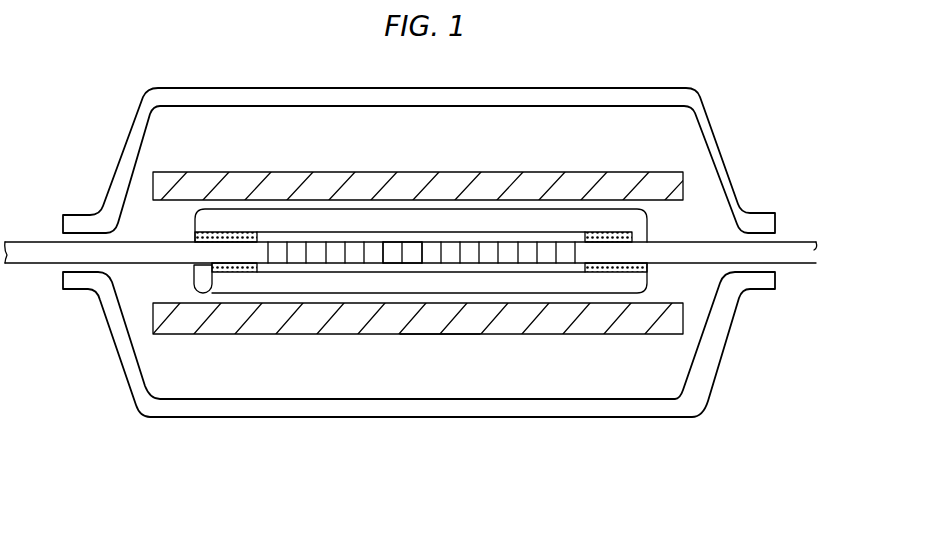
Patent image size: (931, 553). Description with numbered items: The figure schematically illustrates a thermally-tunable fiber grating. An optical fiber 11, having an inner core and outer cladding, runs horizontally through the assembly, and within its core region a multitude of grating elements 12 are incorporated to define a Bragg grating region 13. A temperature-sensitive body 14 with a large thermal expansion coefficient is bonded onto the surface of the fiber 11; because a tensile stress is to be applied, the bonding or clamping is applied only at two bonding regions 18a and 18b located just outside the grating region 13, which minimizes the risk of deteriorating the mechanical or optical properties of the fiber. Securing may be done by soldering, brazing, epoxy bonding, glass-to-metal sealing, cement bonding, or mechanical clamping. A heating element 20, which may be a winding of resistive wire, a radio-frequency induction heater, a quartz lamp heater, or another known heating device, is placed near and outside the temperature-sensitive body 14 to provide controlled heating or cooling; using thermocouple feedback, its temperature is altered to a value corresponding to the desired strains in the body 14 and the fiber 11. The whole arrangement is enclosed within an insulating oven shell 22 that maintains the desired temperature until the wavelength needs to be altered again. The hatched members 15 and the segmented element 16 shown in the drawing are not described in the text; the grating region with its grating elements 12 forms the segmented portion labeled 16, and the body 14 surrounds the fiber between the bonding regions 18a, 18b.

The fiber 11 is at (788, 241).
The grating elements 12 is at (422, 253).
The grating region 13 is at (310, 232).
The temperature-sensitive body 14 is at (593, 218).
The yoke 15 is at (241, 172).
The magnet ring 16 is at (527, 268).
The bonding region 18a is at (200, 230).
The bonding region 18b is at (627, 230).
The heating element 20 is at (443, 340).
The insulating oven shell 22 is at (620, 418).